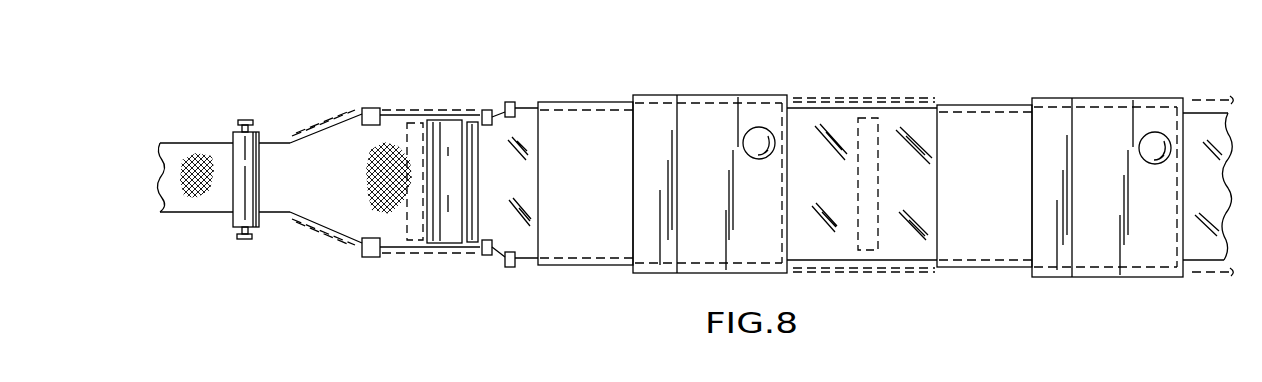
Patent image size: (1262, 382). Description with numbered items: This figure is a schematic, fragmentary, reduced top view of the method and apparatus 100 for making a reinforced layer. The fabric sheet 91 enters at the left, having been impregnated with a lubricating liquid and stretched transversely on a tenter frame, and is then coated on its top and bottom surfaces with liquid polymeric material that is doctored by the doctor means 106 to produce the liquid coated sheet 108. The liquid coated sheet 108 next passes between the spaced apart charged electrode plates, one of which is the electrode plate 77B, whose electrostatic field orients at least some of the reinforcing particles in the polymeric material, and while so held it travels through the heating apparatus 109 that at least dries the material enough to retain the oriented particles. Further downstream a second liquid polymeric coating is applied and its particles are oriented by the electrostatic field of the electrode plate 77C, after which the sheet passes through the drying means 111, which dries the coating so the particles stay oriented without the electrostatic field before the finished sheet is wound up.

The fabric sheet 91 is at (175, 150).
The doctor means 106 is at (471, 128).
The liquid coated sheet 108 is at (525, 247).
The charged electrode plate 77B is at (595, 115).
The heating apparatus 109 is at (706, 92).
The method and apparatus for making the layer means 100 is at (928, 82).
The charged electrode plate 77C is at (995, 247).
The drying means 111 is at (1108, 92).